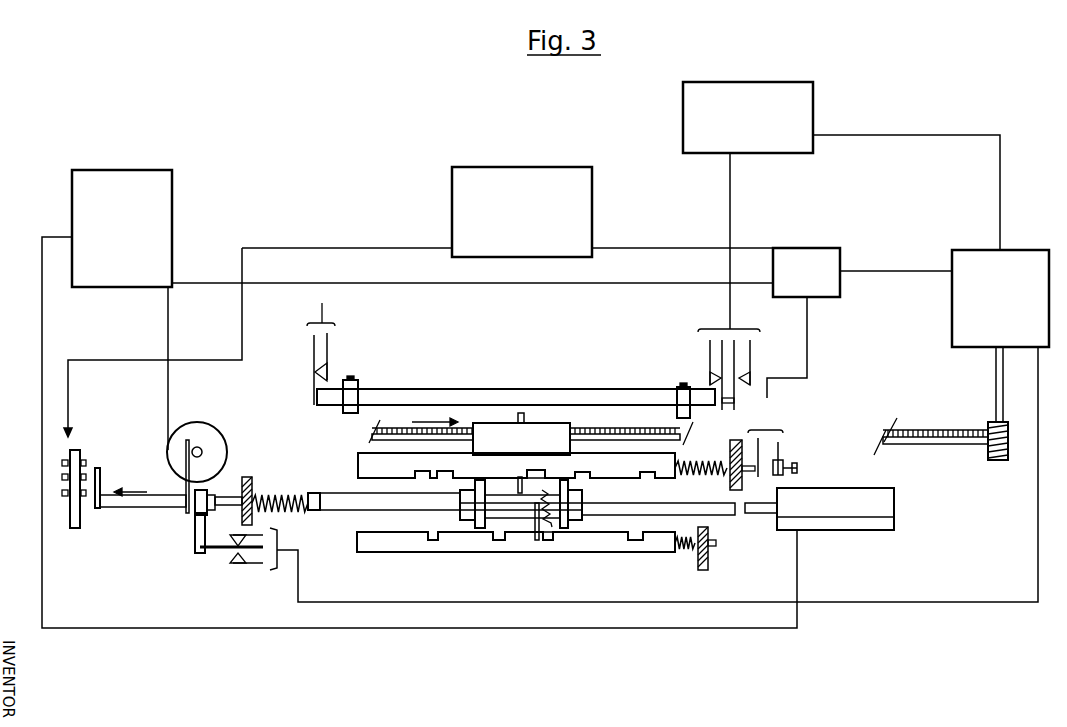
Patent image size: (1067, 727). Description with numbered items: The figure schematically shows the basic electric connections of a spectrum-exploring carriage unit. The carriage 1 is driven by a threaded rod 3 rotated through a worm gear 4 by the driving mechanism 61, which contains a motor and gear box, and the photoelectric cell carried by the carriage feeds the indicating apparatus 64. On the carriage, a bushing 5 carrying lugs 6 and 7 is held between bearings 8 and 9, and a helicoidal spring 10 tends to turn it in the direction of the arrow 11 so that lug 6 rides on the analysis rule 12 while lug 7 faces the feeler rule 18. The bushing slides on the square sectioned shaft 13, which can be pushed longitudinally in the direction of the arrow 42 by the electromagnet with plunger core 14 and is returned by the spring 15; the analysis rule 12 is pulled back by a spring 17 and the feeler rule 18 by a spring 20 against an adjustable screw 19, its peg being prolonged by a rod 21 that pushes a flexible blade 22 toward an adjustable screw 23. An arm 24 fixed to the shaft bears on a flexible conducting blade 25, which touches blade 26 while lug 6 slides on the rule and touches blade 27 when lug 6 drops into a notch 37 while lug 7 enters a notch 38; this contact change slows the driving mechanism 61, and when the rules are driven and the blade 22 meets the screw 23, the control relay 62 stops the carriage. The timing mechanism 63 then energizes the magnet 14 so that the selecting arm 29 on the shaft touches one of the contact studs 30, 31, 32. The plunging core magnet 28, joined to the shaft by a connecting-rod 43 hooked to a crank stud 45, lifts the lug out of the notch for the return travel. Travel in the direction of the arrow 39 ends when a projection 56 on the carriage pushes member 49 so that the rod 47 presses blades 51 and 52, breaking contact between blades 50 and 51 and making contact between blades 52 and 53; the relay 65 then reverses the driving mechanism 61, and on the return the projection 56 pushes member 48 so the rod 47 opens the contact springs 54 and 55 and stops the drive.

The carriage 1 is at (521, 439).
The threaded rod 3 is at (612, 432).
The worm gear 4 is at (1009, 440).
The bushing 5 is at (569, 492).
The lug 6 is at (534, 536).
The lug 7 is at (517, 484).
The bearing 8 is at (575, 527).
The bearing 9 is at (462, 524).
The helicoidal spring 10 is at (543, 500).
The arrow 11 is at (167, 508).
The analysis rule 12 is at (600, 553).
The square sectioned shaft 13 is at (148, 508).
The electromagnet with plunger core 14 is at (866, 530).
The spring 15 is at (280, 496).
The spring 17 is at (686, 552).
The feeler rule 18 is at (358, 465).
The adjustable screw 19 is at (652, 515).
The spring 20 is at (700, 465).
The rod 21 is at (745, 472).
The flexible blade 22 is at (756, 441).
The adjustable screw 23 is at (798, 468).
The arm 24 is at (198, 553).
The flexible conducting blade 25 is at (221, 549).
The blade 26 is at (237, 540).
The flexible blade 27 is at (246, 565).
The plunging core magnet 28 is at (167, 455).
The selecting arm 29 is at (101, 480).
The contact stud 30 is at (66, 492).
The contact stud 31 is at (66, 477).
The contact stud 32 is at (66, 462).
The notch 37 is at (552, 541).
The notch 38 is at (531, 471).
The arrow 39 is at (435, 415).
The arrow 42 is at (130, 485).
The connecting-rod 43 is at (186, 490).
The crank stud 45 is at (196, 515).
The rod 47 is at (535, 389).
The member 48 is at (359, 384).
The member 49 is at (680, 387).
The elastic blade 50 is at (709, 350).
The electro-conductive elastic blade 51 is at (721, 409).
The electro-conductive elastic blade 52 is at (736, 402).
The elastic blade 53 is at (751, 350).
The conducting contact spring 54 is at (313, 358).
The conducting contact spring 55 is at (329, 352).
The projection 56 is at (525, 418).
The driving mechanism 61 is at (988, 250).
The control relay 62 is at (812, 248).
The timing mechanism 63 is at (120, 169).
The indicating apparatus 64 is at (535, 167).
The relay 65 is at (758, 82).